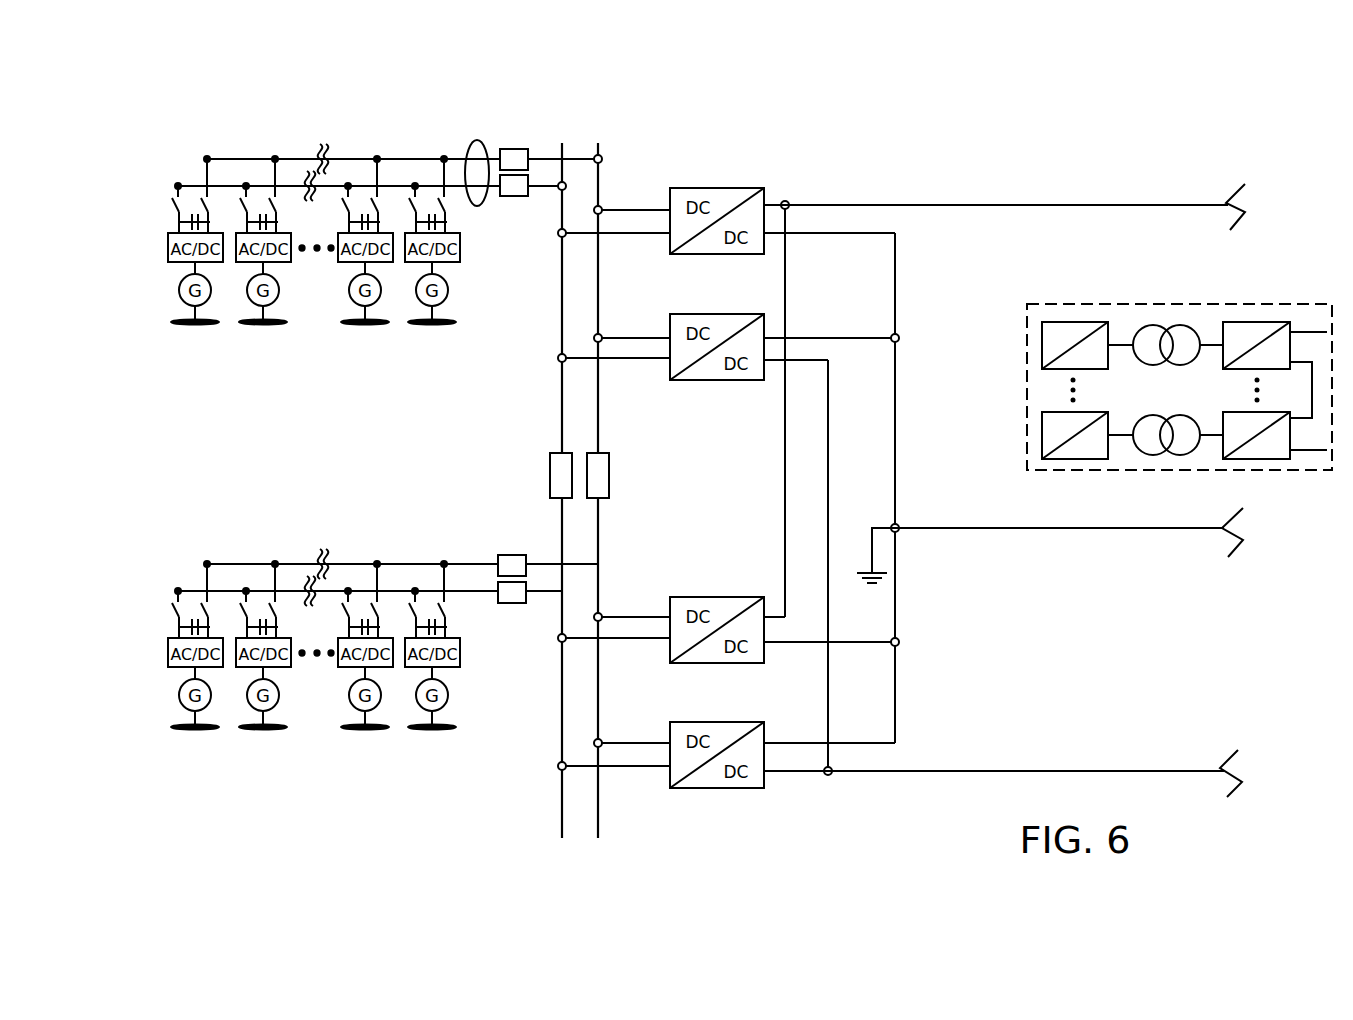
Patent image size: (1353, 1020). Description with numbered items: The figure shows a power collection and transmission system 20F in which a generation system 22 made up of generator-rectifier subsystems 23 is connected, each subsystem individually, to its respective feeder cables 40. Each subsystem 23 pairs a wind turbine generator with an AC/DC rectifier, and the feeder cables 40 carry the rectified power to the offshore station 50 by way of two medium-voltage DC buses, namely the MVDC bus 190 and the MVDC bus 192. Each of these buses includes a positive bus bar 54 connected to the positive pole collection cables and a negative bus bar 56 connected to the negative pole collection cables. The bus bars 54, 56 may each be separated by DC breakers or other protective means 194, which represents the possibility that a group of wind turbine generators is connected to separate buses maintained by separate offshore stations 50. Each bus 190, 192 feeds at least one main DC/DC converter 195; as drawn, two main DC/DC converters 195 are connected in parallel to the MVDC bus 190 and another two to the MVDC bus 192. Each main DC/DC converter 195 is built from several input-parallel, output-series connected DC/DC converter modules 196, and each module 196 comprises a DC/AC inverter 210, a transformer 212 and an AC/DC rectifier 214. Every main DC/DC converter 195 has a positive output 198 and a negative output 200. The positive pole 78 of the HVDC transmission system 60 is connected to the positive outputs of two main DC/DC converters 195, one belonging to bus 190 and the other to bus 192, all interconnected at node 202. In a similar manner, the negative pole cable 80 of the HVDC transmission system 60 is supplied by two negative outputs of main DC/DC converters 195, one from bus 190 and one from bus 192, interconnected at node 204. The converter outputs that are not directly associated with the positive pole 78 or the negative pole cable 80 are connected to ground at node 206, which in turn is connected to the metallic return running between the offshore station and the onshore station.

The generation system 22 is at (170, 117).
The generator-rectifier subsystem 23 is at (236, 368).
The feeder system 40 is at (470, 146).
The offshore station 50 is at (537, 118).
The MVDC positive bus bar 54 is at (598, 417).
The MVDC negative bus bar 56 is at (562, 415).
The HVDC transmission system 60 is at (942, 120).
The positive pole 78 is at (968, 204).
The negative pole cable 80 is at (1210, 770).
The MVDC bus 190 is at (735, 155).
The MVDC bus 192 is at (795, 808).
The DC breakers or protective means 194 is at (550, 473).
The main DC/DC converter 195 is at (705, 258).
The DC/DC converter module 196 is at (1275, 410).
The positive output 198 is at (776, 615).
The negative output 200 is at (803, 645).
The node 202 is at (787, 203).
The node 204 is at (832, 770).
The node 206 is at (897, 335).
The DC/AC inverter 210 is at (1100, 371).
The transformer 212 is at (1178, 366).
The AC/DC rectifier 214 is at (1268, 371).
The power collection and transmission system 20F is at (1268, 196).